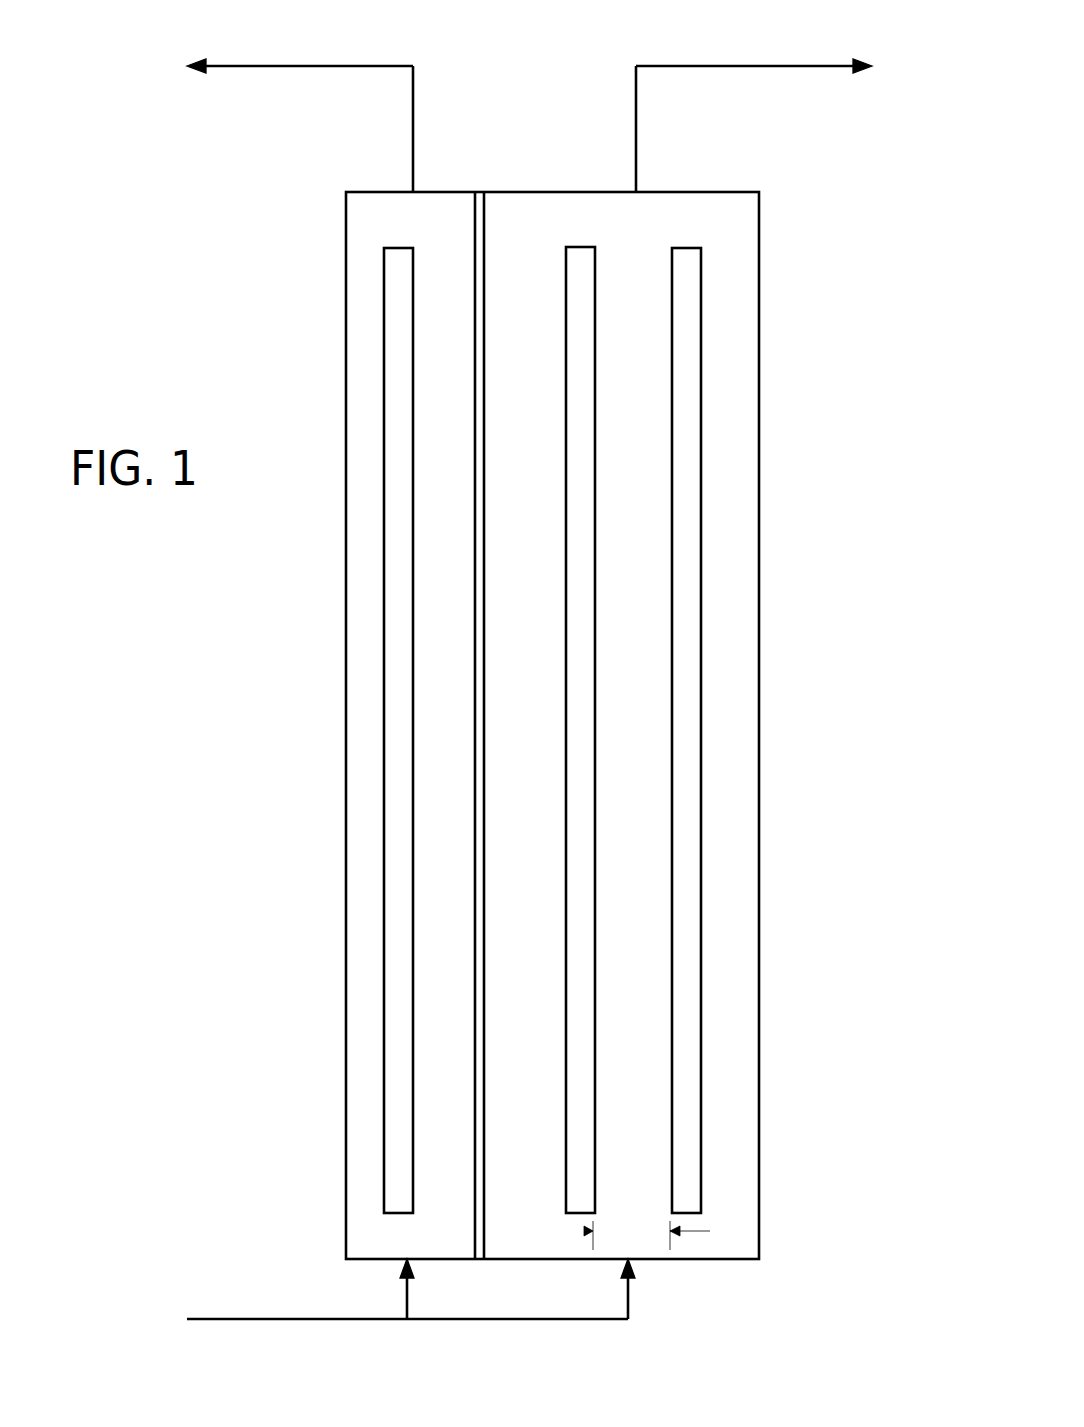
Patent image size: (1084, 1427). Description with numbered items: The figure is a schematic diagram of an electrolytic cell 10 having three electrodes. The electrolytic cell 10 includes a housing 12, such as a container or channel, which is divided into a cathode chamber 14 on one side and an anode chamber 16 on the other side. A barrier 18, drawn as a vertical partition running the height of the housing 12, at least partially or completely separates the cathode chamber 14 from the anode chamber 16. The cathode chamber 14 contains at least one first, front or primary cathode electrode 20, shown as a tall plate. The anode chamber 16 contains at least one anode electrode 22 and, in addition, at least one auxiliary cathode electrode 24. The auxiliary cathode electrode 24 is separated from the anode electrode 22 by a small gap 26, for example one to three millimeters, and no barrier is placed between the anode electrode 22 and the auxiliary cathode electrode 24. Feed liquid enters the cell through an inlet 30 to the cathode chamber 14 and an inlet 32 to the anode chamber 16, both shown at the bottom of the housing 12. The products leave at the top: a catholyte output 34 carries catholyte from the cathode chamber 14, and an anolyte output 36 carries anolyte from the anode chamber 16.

The electrolytic cell 10 is at (314, 296).
The housing 12 is at (345, 635).
The cathode chamber 14 is at (442, 777).
The anode chamber 16 is at (632, 777).
The barrier 18 is at (485, 507).
The primary cathode electrode 20 is at (384, 1005).
The anode electrode 22 is at (595, 943).
The auxiliary cathode electrode 24 is at (700, 1087).
The gap 26 is at (700, 1231).
The inlet 30 is at (406, 1296).
The inlet 32 is at (627, 1284).
The catholyte output 34 is at (411, 157).
The anolyte output 36 is at (637, 163).